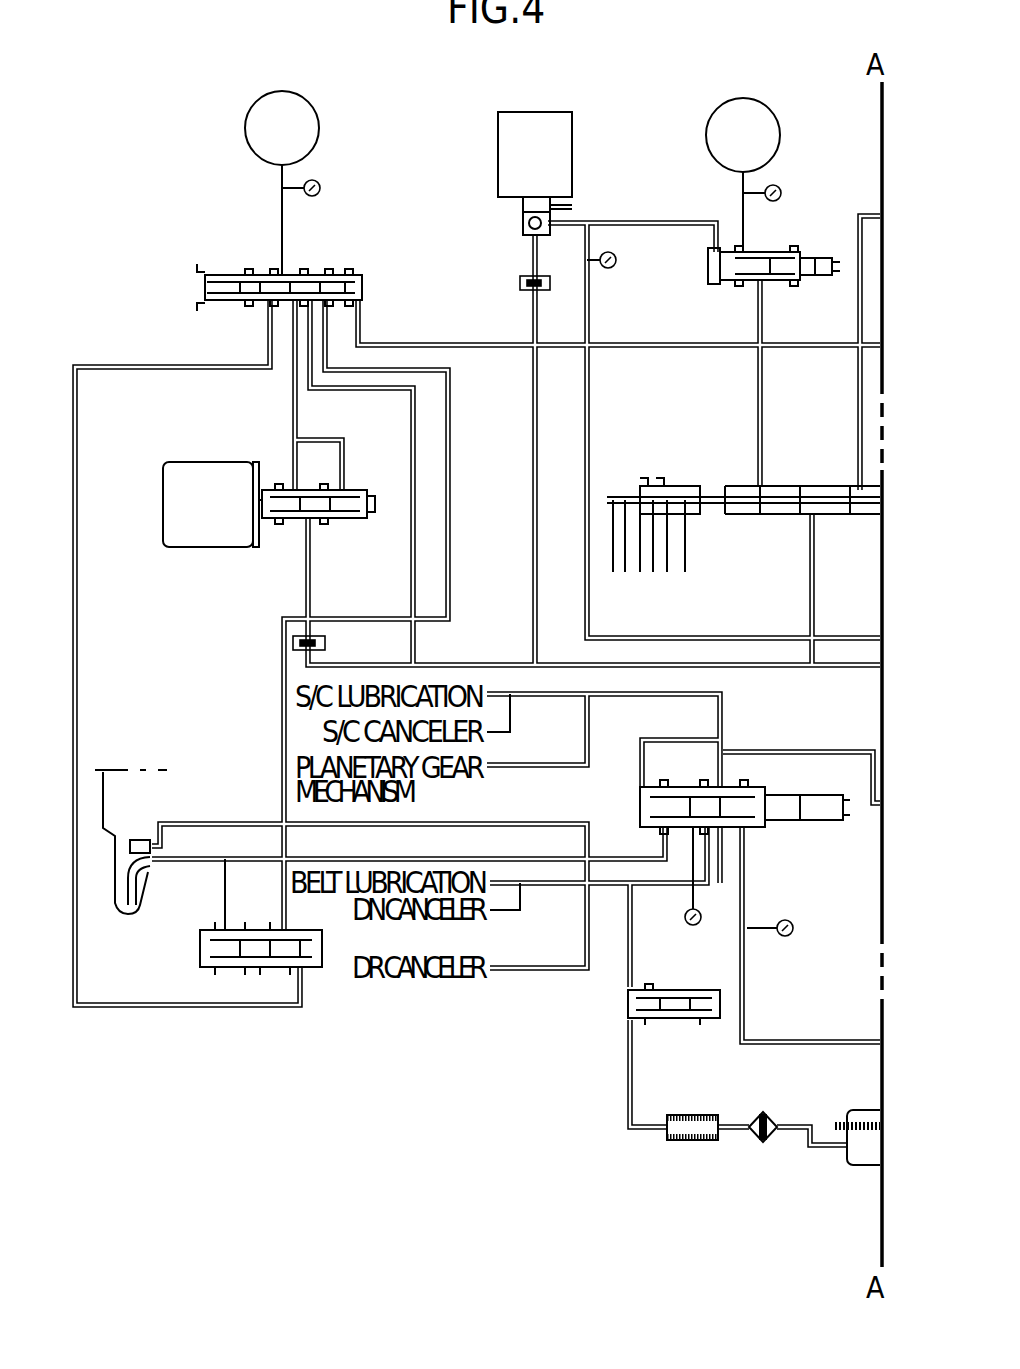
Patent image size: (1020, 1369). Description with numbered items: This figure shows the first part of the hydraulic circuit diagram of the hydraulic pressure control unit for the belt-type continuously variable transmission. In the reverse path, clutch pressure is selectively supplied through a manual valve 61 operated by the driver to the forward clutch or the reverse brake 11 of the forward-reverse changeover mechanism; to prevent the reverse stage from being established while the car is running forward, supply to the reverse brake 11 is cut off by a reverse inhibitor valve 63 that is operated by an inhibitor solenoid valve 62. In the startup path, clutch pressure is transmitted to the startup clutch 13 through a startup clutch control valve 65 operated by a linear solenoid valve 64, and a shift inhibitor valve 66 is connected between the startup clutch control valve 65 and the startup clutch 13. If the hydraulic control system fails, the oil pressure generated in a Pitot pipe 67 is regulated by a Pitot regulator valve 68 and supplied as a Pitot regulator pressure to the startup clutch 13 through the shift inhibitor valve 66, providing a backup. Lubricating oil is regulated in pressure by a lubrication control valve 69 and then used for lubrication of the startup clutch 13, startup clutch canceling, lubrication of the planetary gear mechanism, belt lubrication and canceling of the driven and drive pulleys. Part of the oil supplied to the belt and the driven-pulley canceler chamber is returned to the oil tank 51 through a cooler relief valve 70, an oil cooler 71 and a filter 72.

The reverse brake 11 is at (779, 123).
The startup clutch 13 is at (320, 137).
The oil tank 51 is at (872, 1110).
The manual valve 61 is at (703, 456).
The inhibitor solenoid valve 62 is at (496, 211).
The reverse inhibitor valve 63 is at (793, 238).
The linear solenoid valve 64 is at (196, 468).
The startup clutch control valve 65 is at (335, 527).
The shift inhibitor valve 66 is at (236, 266).
The Pitot pipe 67 is at (165, 900).
The Pitot regulator valve 68 is at (320, 995).
The lubrication control valve 69 is at (772, 852).
The cooler relief valve 70 is at (677, 976).
The oil cooler 71 is at (686, 1113).
The filter 72 is at (766, 1112).